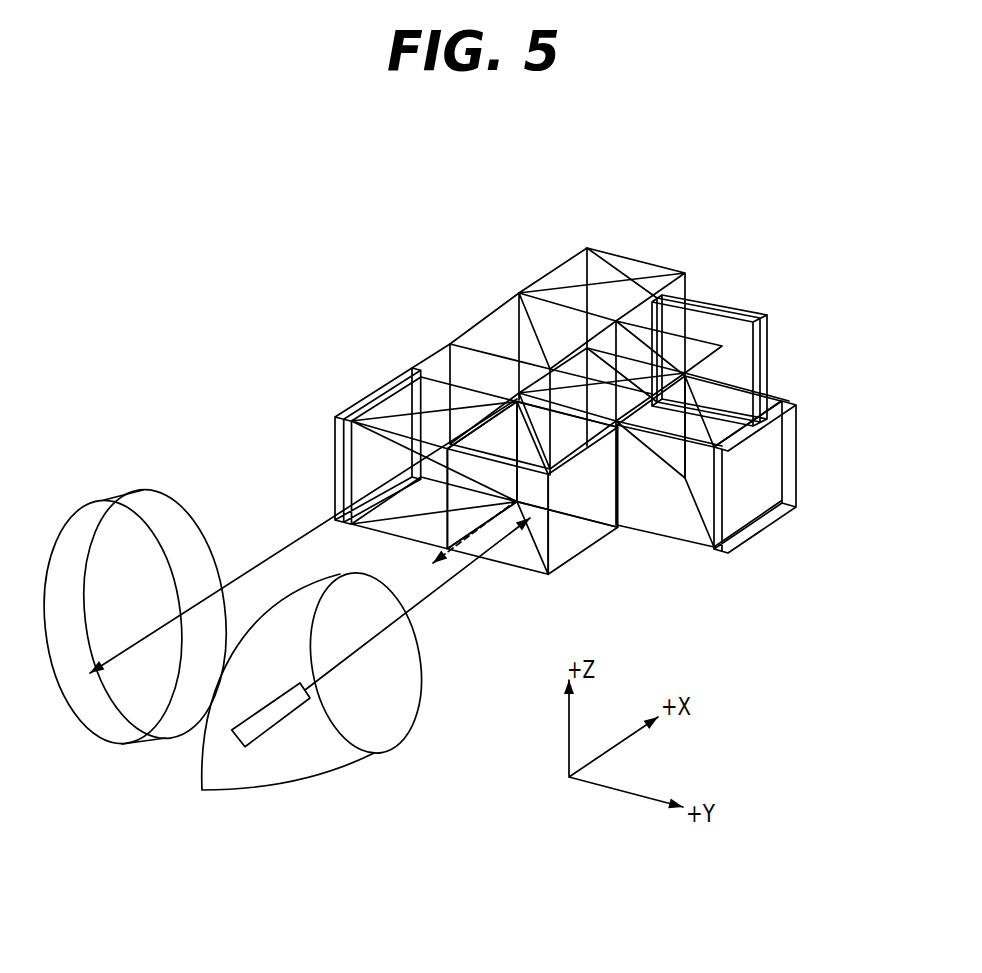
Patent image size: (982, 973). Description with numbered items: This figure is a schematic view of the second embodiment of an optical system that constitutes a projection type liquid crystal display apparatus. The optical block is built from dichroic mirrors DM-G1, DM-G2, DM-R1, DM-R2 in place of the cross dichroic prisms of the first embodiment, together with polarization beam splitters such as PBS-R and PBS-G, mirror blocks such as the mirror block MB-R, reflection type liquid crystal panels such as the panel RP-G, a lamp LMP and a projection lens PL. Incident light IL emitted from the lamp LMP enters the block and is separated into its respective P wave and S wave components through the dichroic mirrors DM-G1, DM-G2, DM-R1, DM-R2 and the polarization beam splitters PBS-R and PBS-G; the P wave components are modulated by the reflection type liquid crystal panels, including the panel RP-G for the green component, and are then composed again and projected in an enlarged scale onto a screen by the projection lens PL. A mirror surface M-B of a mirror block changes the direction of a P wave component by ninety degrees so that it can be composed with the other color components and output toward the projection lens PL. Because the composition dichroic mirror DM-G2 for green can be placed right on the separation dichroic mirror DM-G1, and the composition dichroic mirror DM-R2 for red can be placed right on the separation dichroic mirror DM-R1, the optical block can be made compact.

The reflection type liquid crystal panel for G RP-G is at (372, 395).
The polarization beam splitter for G PBS-G is at (380, 527).
The separation dichroic mirror for G DM-G1 is at (513, 576).
The composition dichroic mirror for G DM-G2 is at (482, 318).
The separation dichroic mirror for R DM-R1 is at (596, 513).
The composition dichroic mirror for R DM-R2 is at (560, 266).
The polarization beam splitter for R PBS-R is at (693, 553).
The mirror block for R MB-R is at (772, 513).
The mirror surface M-B is at (767, 347).
The projection lens PL is at (100, 745).
The lamp LMP is at (357, 762).
The incident light IL is at (430, 612).